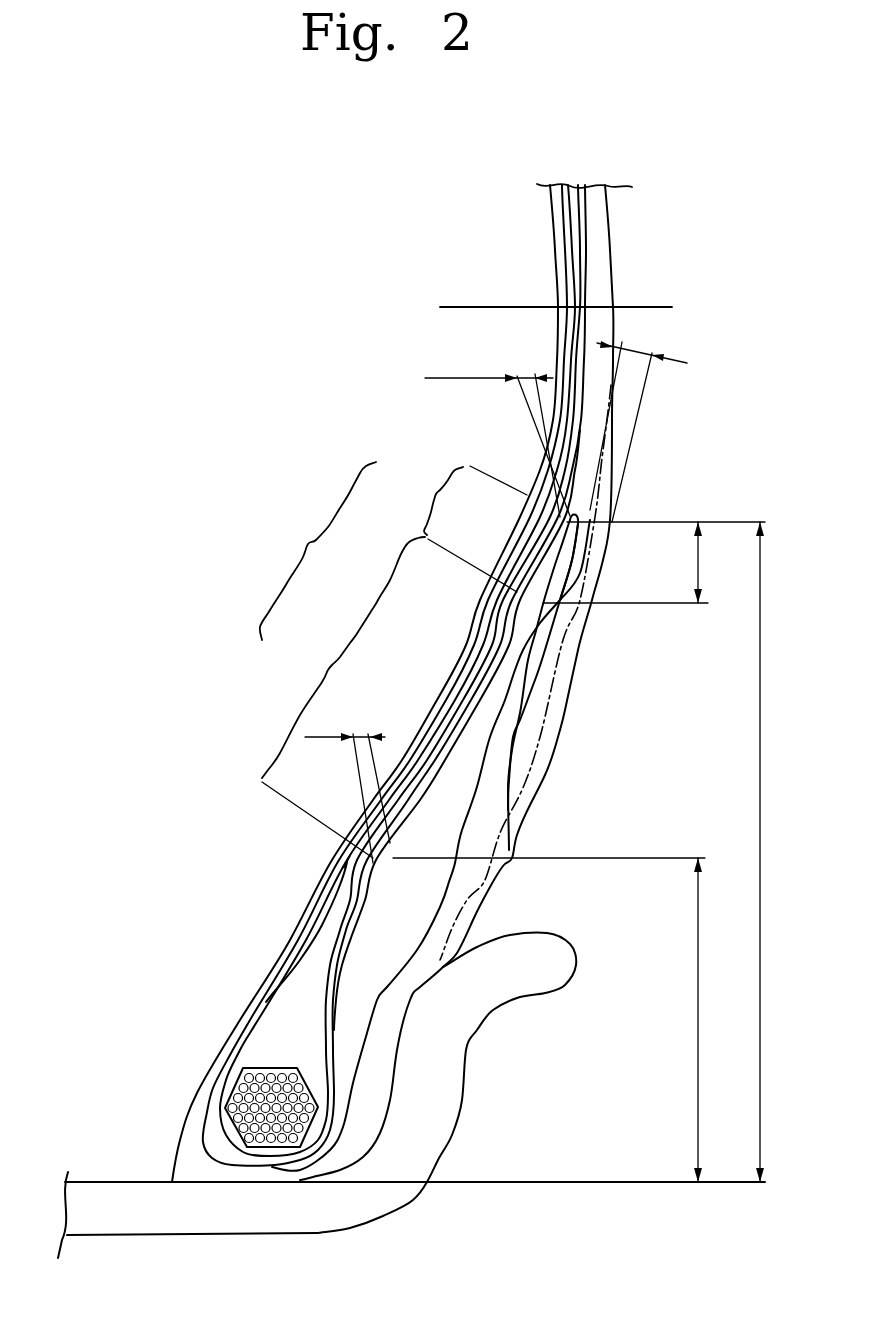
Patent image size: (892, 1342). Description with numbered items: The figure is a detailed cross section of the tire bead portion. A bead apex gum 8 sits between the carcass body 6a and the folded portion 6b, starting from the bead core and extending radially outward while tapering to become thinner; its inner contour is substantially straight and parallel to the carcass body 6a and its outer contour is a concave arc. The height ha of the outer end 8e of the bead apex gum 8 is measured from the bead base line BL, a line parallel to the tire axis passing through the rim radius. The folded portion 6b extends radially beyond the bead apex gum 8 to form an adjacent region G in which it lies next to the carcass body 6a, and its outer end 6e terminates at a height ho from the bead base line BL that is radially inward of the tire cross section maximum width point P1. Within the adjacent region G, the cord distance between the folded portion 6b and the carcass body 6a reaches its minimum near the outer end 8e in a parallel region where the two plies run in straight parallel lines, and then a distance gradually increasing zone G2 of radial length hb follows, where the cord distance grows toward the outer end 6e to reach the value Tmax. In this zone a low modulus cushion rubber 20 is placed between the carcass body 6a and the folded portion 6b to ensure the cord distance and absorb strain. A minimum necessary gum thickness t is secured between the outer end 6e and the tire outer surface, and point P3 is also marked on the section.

The carcass body 6a is at (303, 941).
The folded portion 6b is at (464, 736).
The outer end of the folded portion 6e is at (587, 512).
The bead apex gum 8 is at (285, 1022).
The outer end of the bead apex gum 8e is at (350, 861).
The cushion rubber 20 is at (553, 532).
The tire cross section maximum width point P1 is at (613, 307).
The point P3 rim flange contact P3 is at (443, 967).
The bead base line BL is at (557, 1183).
The carcass cord distance at the outer end Tmax is at (497, 432).
The minimum necessary thickness of gum t is at (638, 428).
The radial length of the distance gradually increasing zone hb is at (654, 562).
The height of the outer end of the folded portion ho is at (763, 852).
The height of the outer end of the bead apex gum ha is at (554, 1020).
The adjacent region G is at (318, 551).
The distance gradually increasing zone G2 is at (460, 497).